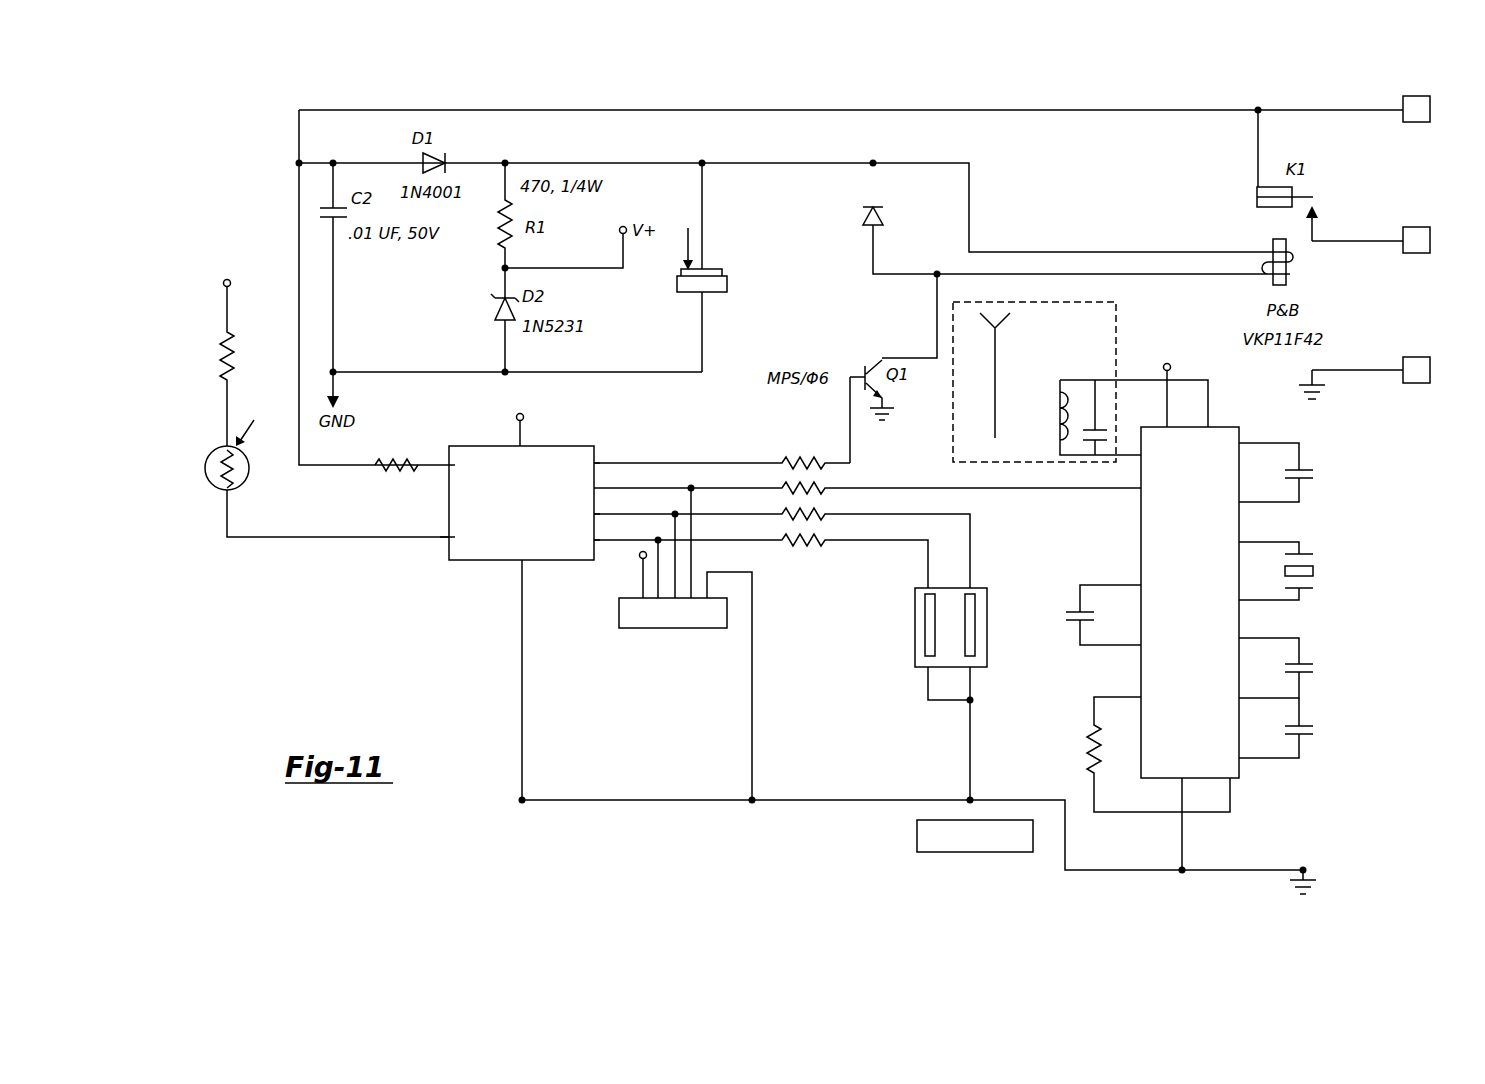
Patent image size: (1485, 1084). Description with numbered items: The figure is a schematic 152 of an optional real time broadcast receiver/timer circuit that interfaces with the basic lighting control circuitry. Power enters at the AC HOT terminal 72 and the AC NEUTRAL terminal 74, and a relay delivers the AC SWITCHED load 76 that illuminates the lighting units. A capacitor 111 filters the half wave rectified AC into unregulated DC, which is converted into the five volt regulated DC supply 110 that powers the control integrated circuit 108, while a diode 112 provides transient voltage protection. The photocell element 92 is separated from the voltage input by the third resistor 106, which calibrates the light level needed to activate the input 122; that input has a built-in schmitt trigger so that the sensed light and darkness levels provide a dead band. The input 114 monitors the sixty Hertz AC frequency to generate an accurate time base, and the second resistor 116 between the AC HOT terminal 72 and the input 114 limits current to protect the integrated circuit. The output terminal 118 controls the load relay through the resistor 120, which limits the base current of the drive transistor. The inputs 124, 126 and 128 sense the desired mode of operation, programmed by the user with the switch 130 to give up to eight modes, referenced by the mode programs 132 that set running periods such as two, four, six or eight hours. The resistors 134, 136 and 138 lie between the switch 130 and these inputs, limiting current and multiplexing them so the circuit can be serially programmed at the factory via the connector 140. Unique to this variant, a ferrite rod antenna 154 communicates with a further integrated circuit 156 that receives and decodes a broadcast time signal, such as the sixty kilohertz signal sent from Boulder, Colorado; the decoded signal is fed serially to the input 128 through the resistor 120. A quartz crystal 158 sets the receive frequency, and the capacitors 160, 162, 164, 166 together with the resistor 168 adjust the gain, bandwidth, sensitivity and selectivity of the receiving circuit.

The AC HOT terminal 72 is at (1430, 109).
The AC SWITCHED load 76 is at (1430, 240).
The AC NEUTRAL terminal 74 is at (1430, 370).
The photocell element 92 is at (206, 468).
The third resistor 106 is at (222, 358).
The control integrated circuit 108 is at (467, 562).
The regulated DC supply 110 is at (533, 412).
The capacitor 111 is at (708, 268).
The diode 112 is at (866, 216).
The input 114 is at (462, 447).
The second resistor 116 is at (385, 442).
The output terminal 118 is at (573, 447).
The resistor 120 is at (787, 442).
The input 122 is at (478, 522).
The input 124 is at (548, 540).
The input 126 is at (553, 514).
The input 128 is at (510, 462).
The switch 130 is at (913, 668).
The mode programs 132 is at (927, 933).
The resistor 134 is at (862, 555).
The resistor 136 is at (862, 527).
The resistor 138 is at (865, 503).
The connector 140 is at (595, 627).
The schematic 152 is at (615, 834).
The ferrite rod antenna 154 is at (1017, 302).
The integrated circuit 156 is at (1226, 438).
The quartz crystal 158 is at (1299, 546).
The capacitor 160 is at (1050, 622).
The capacitor 162 is at (1299, 452).
The capacitor 164 is at (1299, 648).
The capacitor 166 is at (1299, 712).
The resistor 168 is at (1047, 754).